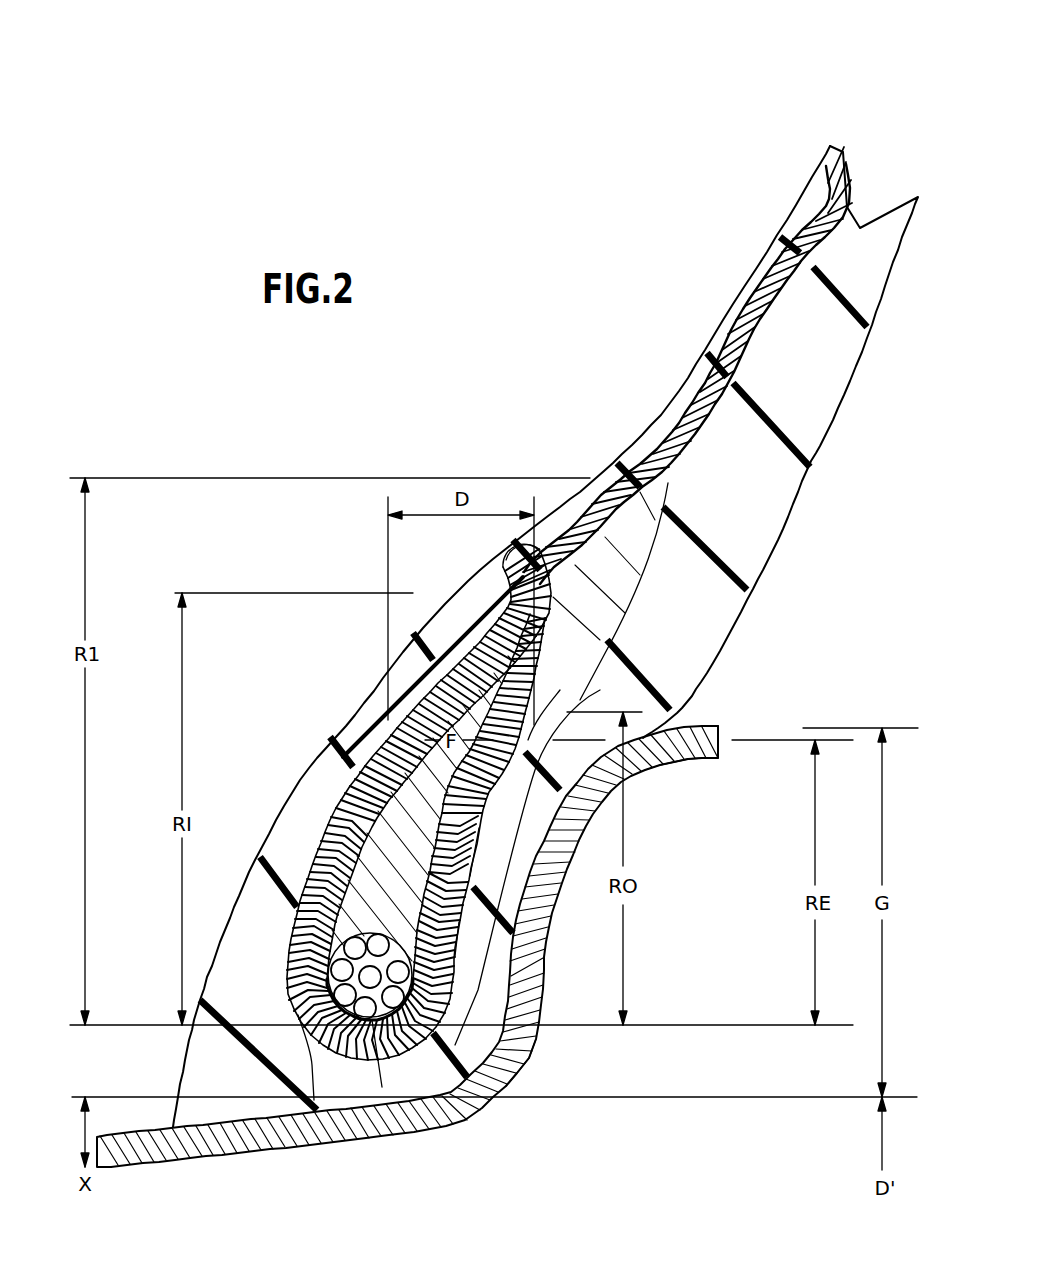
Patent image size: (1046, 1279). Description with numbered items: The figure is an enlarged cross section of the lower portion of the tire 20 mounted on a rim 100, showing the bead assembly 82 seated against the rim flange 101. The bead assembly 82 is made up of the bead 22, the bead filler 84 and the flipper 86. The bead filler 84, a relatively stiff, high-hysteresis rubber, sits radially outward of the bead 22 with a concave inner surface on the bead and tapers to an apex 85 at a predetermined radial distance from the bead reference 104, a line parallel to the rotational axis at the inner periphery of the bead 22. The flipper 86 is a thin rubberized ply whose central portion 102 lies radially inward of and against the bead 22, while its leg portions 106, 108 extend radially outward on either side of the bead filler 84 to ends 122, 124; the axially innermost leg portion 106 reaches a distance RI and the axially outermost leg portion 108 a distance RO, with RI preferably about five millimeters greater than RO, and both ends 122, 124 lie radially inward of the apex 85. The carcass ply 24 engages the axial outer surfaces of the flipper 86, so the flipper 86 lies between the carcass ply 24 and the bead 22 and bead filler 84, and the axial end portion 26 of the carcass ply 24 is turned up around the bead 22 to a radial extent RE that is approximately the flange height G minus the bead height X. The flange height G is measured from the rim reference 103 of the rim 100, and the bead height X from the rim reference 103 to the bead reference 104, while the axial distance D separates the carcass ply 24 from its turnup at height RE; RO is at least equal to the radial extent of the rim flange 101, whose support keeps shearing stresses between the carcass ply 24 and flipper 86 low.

The tire 20 is at (832, 140).
The bead 22 is at (388, 1020).
The carcass ply 24 is at (780, 287).
The axial end portion 26 is at (600, 690).
The bead assembly 82 is at (460, 943).
The bead filler 84 is at (410, 885).
The apex 85 is at (668, 483).
The flipper 86 is at (337, 810).
The rim 100 is at (350, 1137).
The rim flange 101 is at (670, 763).
The central portion 102 is at (382, 1087).
The rim reference 103 is at (540, 1097).
The bead reference 104 is at (313, 1110).
The axially innermost leg portion 106 is at (390, 727).
The axially outermost leg portion 108 is at (475, 832).
The end of innermost leg portion 122 is at (515, 545).
The end of outermost leg portion 124 is at (560, 690).